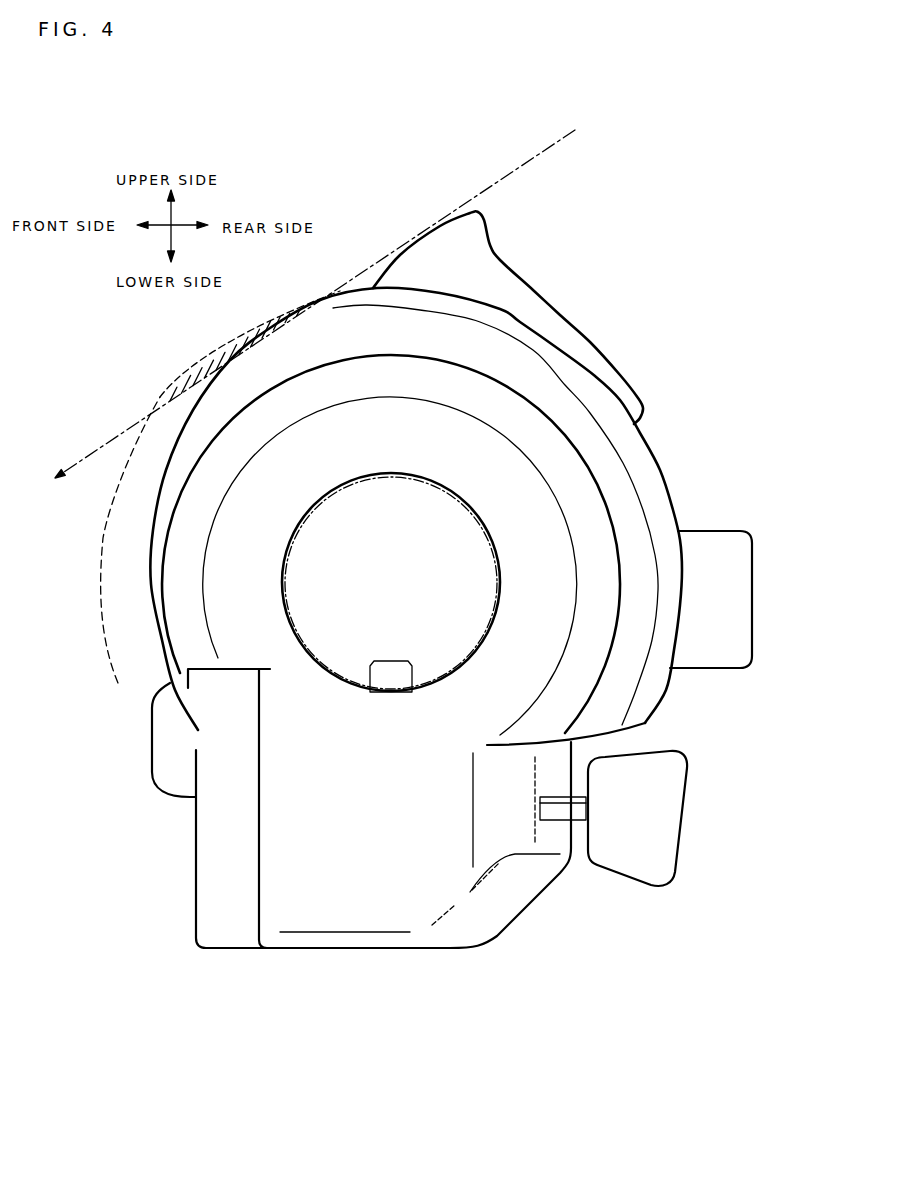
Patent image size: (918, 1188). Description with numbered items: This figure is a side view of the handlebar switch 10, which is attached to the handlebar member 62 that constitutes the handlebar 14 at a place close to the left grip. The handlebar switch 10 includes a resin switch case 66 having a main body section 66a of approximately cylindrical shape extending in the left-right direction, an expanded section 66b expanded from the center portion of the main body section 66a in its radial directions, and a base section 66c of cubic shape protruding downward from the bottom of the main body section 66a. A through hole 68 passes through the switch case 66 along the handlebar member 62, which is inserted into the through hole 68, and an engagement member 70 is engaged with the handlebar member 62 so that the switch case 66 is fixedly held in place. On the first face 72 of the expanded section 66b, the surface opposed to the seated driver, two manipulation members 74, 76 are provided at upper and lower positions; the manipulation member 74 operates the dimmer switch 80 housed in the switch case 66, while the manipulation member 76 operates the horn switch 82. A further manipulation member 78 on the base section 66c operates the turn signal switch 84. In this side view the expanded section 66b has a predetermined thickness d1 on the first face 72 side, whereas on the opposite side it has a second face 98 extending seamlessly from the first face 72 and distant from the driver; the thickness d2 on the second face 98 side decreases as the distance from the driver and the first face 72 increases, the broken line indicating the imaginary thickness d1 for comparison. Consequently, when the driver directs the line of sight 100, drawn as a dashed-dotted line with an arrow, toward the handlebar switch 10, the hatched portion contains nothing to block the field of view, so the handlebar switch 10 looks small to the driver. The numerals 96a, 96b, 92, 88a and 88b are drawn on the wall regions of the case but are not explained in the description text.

The handlebar switch 10 is at (326, 174).
The line of sight 100 is at (498, 178).
The manipulation member 74 is at (508, 317).
The dimmer switch 80 is at (483, 262).
The inner peripheral surface 96a is at (520, 410).
The main body section 66a is at (575, 425).
The expanded section 66b is at (612, 460).
The gap 92 is at (626, 487).
The outer peripheral surface 96b is at (662, 507).
The thin wall portion 88b is at (183, 473).
The thickness d2 is at (197, 537).
The wall portion 88a is at (222, 572).
The second face 98 is at (148, 598).
The through hole 68 is at (485, 572).
The engagement member 70 is at (395, 668).
The first face 72 is at (680, 638).
The thickness d1 is at (577, 653).
The manipulation member 76 is at (751, 701).
The horn switch 82 is at (733, 652).
The handlebar member 62 is at (391, 629).
The handlebar 14 is at (338, 687).
The manipulation member 78 is at (652, 818).
The turn signal switch 84 is at (673, 815).
The switch case 66 is at (573, 898).
The base section 66c is at (358, 912).